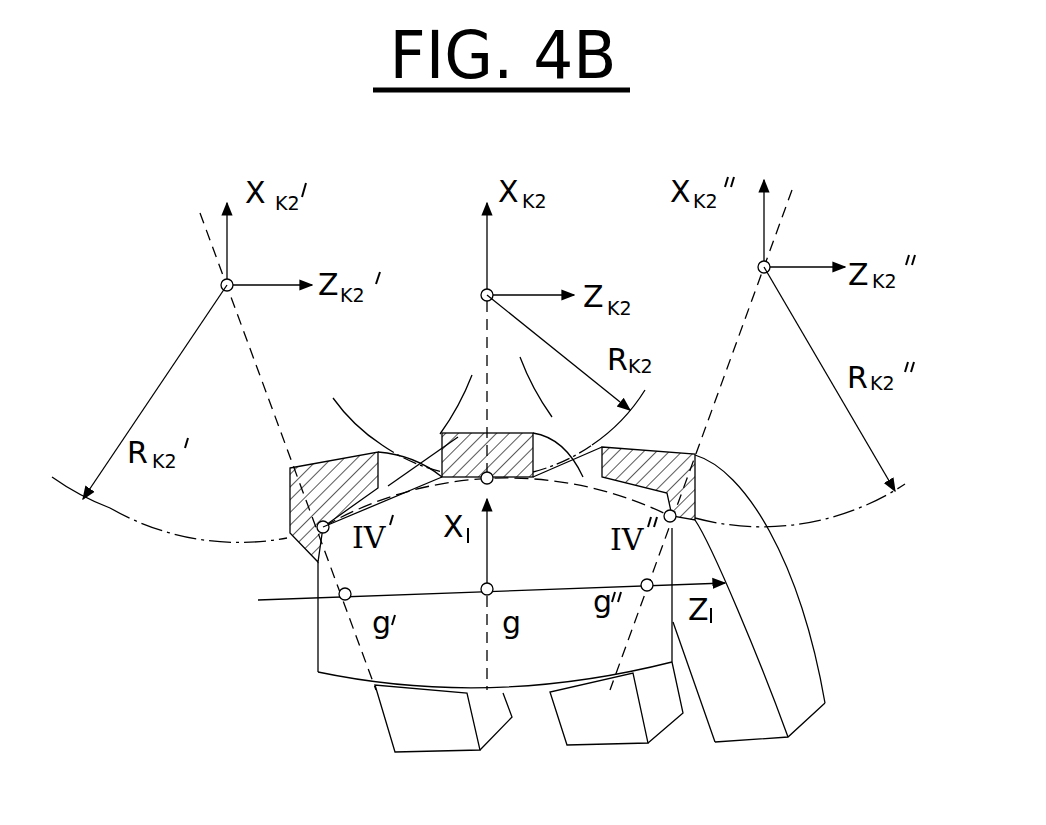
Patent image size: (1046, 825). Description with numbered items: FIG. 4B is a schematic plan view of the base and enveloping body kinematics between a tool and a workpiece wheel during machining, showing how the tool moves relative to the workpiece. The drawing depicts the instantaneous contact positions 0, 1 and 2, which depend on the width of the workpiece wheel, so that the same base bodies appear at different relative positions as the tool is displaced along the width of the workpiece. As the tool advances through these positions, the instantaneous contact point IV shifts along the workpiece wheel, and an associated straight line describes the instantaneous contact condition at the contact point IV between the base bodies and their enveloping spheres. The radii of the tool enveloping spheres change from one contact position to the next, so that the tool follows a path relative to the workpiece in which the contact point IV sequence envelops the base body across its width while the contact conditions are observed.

The instantaneous contact position 0 is at (616, 703).
The instantaneous contact position 1 is at (430, 738).
The instantaneous contact position 2 is at (749, 682).
The instantaneous contact point IV is at (489, 478).